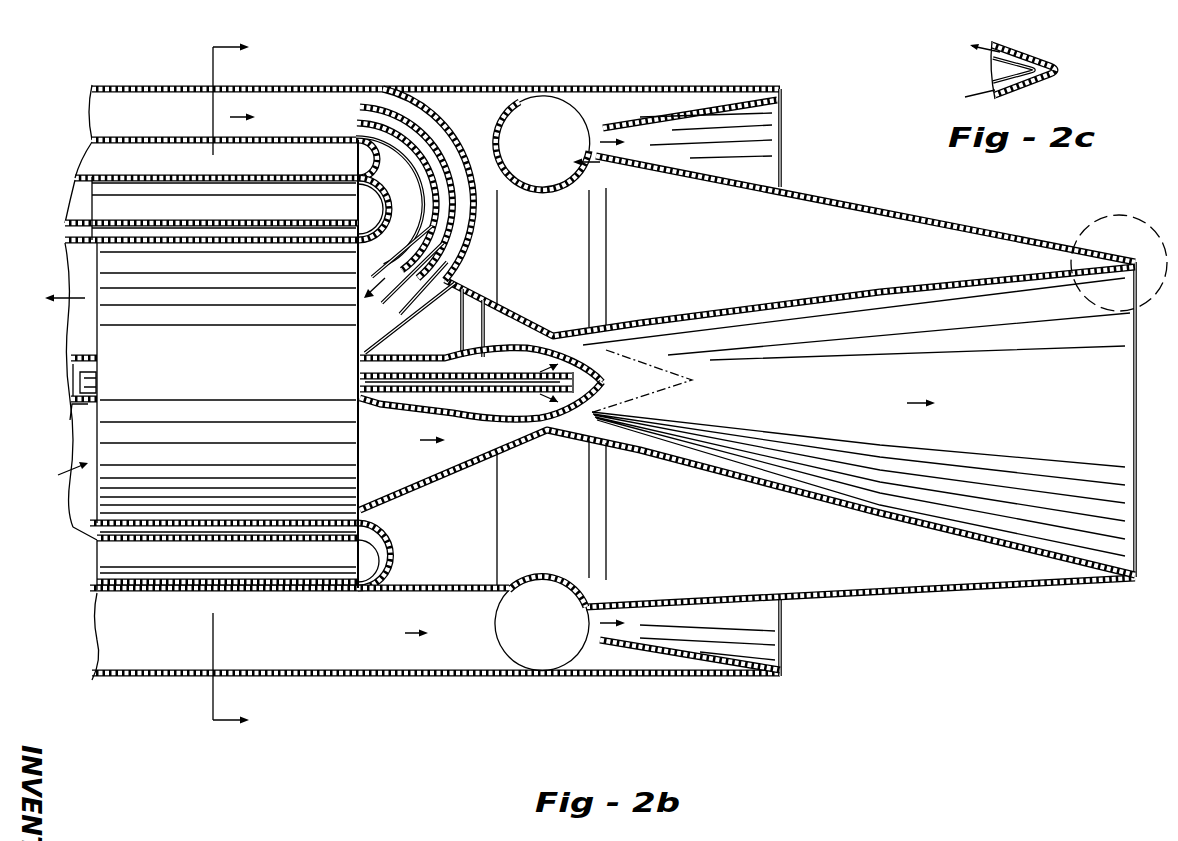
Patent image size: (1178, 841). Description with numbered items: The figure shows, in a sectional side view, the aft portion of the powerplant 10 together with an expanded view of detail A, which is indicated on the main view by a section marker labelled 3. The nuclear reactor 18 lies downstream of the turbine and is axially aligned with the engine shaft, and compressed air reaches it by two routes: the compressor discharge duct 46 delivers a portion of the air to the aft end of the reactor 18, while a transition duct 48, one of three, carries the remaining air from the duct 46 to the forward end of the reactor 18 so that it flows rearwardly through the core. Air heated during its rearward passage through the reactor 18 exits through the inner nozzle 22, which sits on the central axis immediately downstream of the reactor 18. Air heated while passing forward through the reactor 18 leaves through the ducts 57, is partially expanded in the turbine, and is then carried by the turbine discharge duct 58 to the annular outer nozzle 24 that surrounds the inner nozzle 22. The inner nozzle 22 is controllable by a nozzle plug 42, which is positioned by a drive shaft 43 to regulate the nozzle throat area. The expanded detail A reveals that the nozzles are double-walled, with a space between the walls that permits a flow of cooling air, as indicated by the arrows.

The powerplant 10 is at (430, 47).
The compressor discharge duct 46 is at (130, 87).
The section line 3- 3 is at (242, 385).
The outer nozzle 24 is at (603, 128).
The ducts 57 is at (66, 240).
The nuclear reactor 18 is at (182, 364).
The transition duct 48 is at (74, 410).
The nozzle plug 42 is at (600, 354).
The drive shaft 43 is at (420, 396).
The inner nozzle 22 is at (678, 460).
The turbine discharge duct 58 is at (120, 678).
The detail A is at (1107, 219).